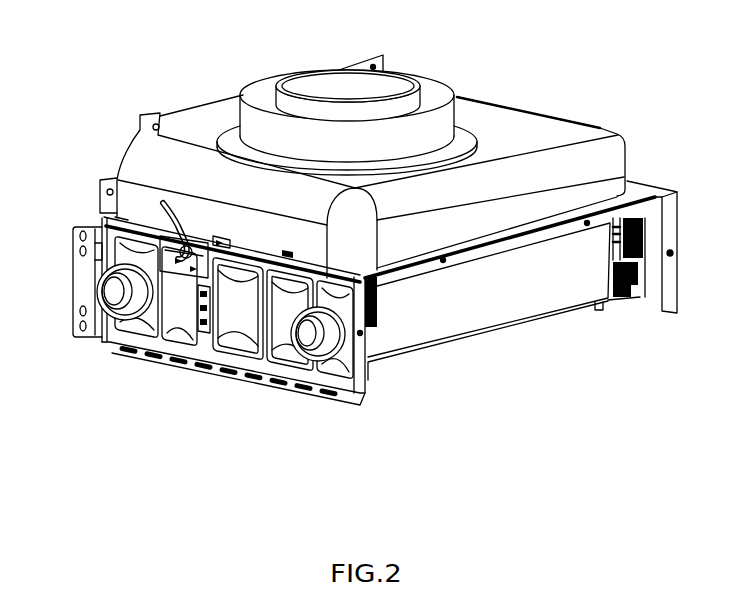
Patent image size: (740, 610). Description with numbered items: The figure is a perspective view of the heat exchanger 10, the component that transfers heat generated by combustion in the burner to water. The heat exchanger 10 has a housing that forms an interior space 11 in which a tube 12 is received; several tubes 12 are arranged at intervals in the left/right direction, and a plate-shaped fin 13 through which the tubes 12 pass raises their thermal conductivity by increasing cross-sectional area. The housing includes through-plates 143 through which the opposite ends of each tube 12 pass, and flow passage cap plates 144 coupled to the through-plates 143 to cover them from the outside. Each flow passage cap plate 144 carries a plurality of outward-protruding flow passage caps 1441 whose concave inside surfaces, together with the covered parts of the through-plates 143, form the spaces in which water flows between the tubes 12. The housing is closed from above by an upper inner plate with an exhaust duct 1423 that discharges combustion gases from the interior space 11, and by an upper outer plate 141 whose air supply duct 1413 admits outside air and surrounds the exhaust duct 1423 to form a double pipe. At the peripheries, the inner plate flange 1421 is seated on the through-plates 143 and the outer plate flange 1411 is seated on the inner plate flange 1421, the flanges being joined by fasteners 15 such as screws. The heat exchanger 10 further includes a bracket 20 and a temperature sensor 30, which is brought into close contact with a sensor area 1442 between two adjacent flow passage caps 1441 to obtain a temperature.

The heat exchanger 10 is at (349, 247).
The interior space 11 is at (423, 356).
The tube 12 is at (459, 323).
The fin 13 is at (596, 310).
The fastener 15 is at (183, 228).
The bracket 20 is at (183, 300).
The temperature sensor 30 is at (222, 241).
The upper outer plate 141 is at (357, 155).
The through-plate 143 is at (648, 300).
The flow passage cap plate 144 is at (237, 340).
The outer plate flange 1411 is at (100, 193).
The air supply duct 1413 is at (452, 82).
The inner plate flange 1421 is at (100, 224).
The exhaust duct 1423 is at (427, 77).
The flow passage cap 1441 is at (250, 360).
The sensor area 1442 is at (213, 370).